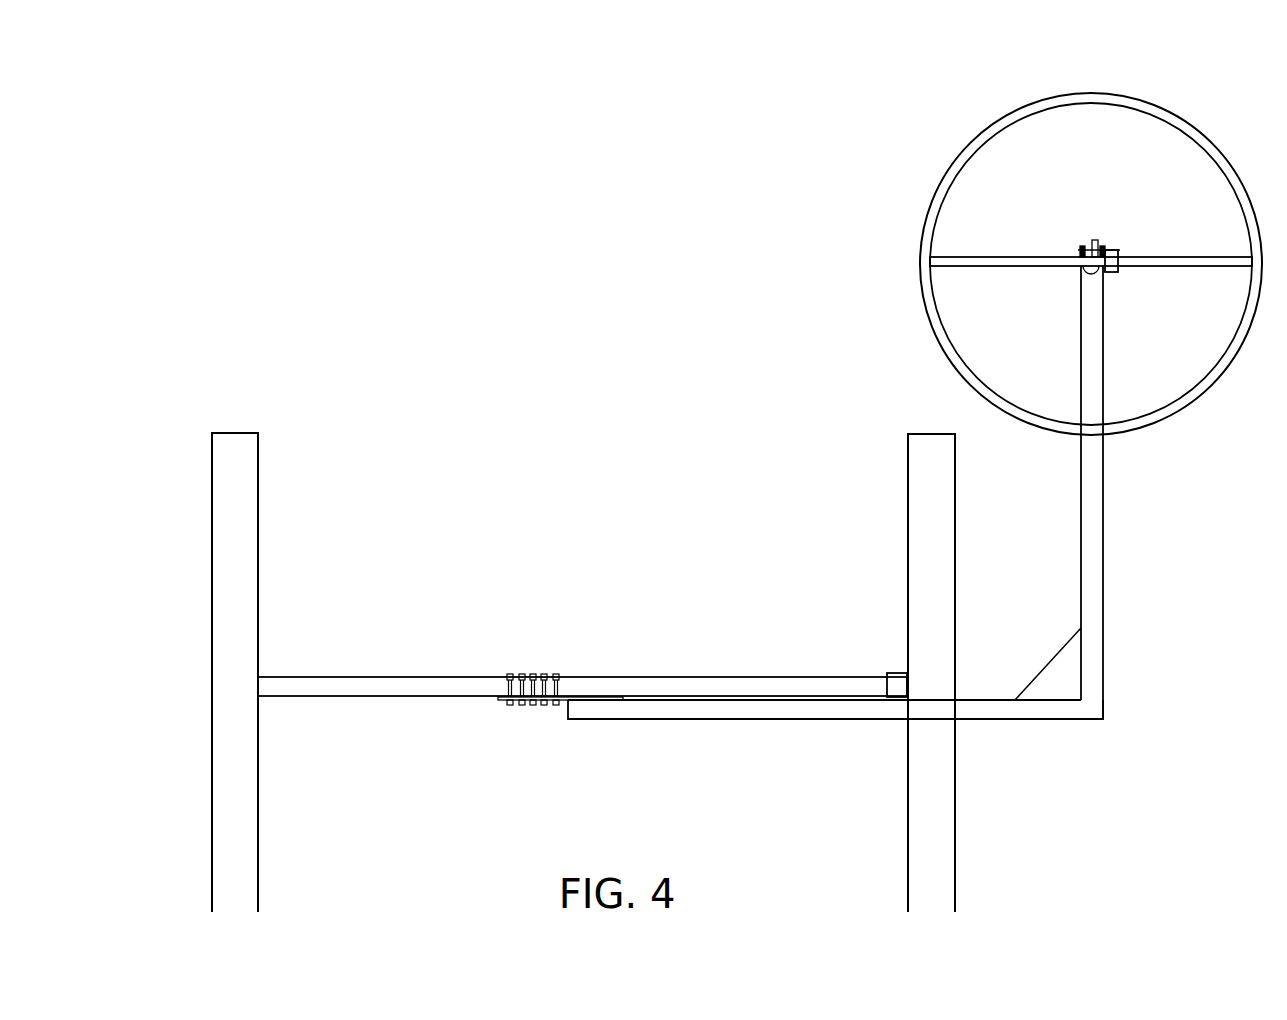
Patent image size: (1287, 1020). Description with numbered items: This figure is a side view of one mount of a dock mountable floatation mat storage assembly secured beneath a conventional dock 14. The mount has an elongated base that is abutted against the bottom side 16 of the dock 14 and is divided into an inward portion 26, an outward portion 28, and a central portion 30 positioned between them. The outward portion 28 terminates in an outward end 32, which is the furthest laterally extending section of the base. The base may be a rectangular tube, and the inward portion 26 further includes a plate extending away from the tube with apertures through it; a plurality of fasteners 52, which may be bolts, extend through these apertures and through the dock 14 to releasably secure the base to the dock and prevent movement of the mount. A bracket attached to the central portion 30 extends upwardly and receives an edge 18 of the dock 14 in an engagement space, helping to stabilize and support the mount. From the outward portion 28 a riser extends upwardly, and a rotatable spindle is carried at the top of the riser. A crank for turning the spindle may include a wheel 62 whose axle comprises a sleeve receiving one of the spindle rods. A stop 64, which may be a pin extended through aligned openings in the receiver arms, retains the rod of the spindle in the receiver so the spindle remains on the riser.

The dock 14 is at (411, 677).
The bottom side 16 is at (341, 697).
The edge 18 is at (900, 688).
The inward portion 26 is at (583, 742).
The outward portion 28 is at (1035, 748).
The central portion 30 is at (812, 758).
The outward end 32 is at (1105, 708).
The fastener 52 is at (510, 702).
The wheel 62 is at (1196, 397).
The stop 64 is at (1088, 240).